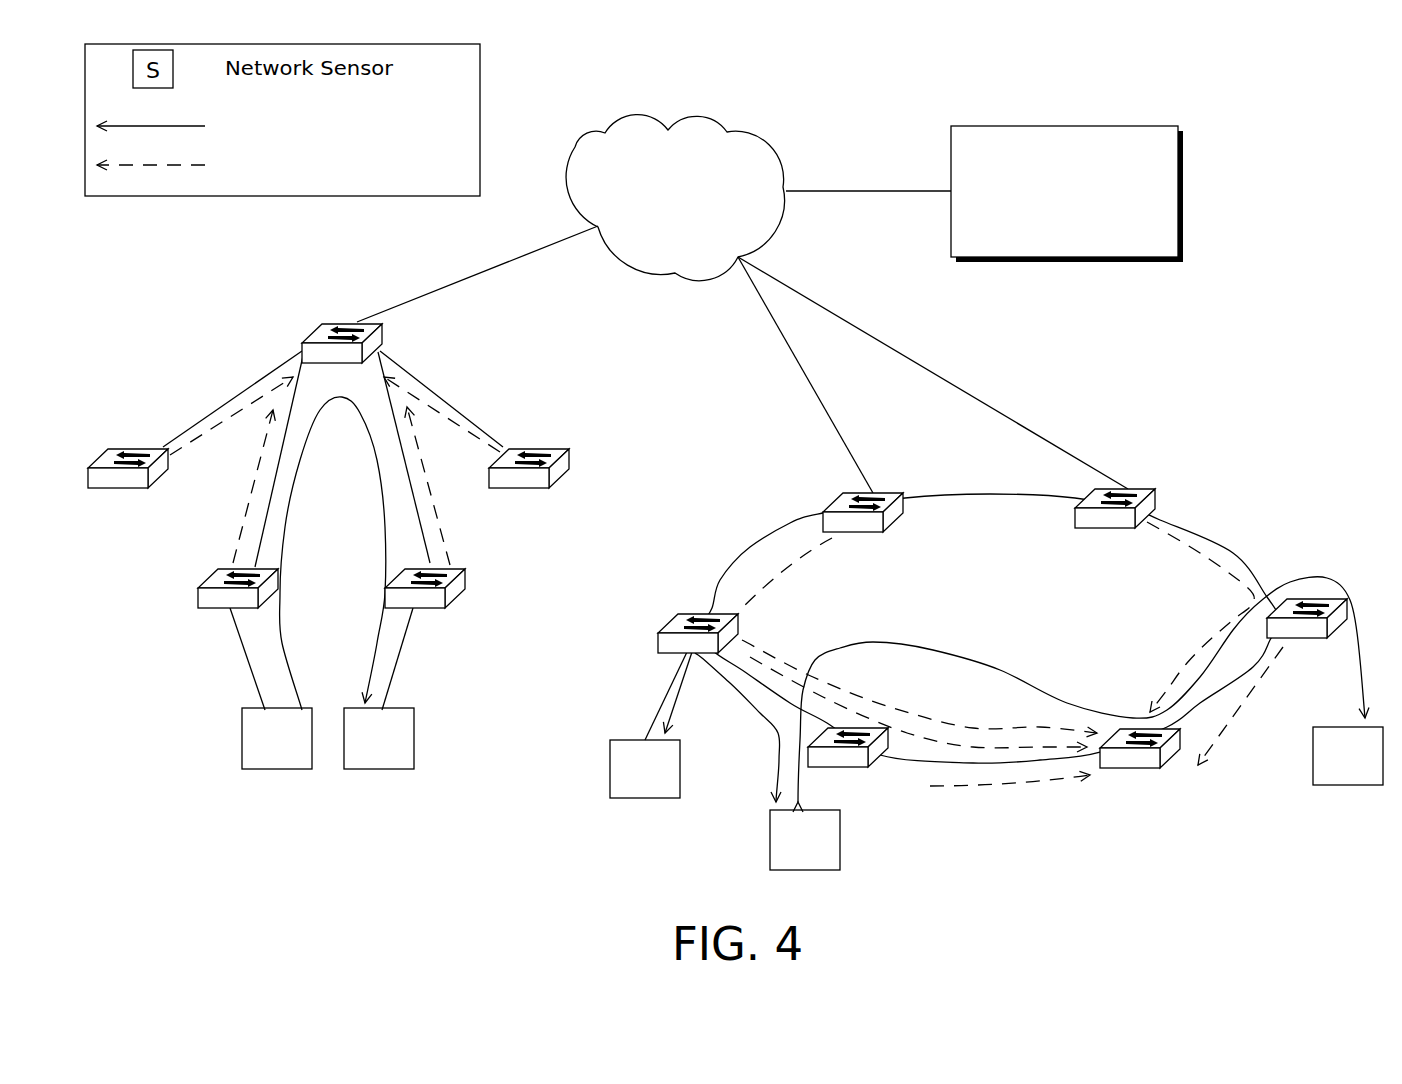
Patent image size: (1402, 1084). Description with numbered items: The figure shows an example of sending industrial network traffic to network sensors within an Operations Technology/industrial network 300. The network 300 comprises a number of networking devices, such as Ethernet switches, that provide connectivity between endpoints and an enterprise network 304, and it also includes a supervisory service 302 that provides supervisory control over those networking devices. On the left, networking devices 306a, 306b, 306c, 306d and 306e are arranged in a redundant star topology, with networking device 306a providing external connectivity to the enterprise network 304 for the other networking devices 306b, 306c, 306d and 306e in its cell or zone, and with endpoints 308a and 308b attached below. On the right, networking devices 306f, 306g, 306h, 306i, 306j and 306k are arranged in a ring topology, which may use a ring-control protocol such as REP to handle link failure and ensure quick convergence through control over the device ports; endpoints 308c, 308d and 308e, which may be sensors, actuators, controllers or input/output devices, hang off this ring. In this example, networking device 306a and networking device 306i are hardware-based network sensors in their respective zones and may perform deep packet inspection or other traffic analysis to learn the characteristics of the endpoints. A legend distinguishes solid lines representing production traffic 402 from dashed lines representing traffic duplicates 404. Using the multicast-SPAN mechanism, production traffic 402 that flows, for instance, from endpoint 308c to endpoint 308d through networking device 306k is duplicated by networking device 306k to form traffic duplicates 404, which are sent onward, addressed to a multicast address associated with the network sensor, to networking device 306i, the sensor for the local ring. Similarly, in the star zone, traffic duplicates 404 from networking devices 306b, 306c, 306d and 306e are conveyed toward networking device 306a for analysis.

The network 300 is at (735, 465).
The supervisory service 302 is at (1047, 232).
The enterprise network 304 is at (660, 236).
The networking device 306a is at (310, 364).
The networking device 306b is at (107, 489).
The networking device 306c is at (509, 489).
The networking device 306d is at (205, 609).
The networking device 306e is at (430, 609).
The networking device 306f is at (843, 533).
The networking device 306g is at (1093, 529).
The networking device 306h is at (1302, 638).
The networking device 306i is at (1117, 768).
The networking device 306j is at (843, 767).
The networking device 306k is at (680, 653).
The endpoint 308a is at (253, 749).
The endpoint 308b is at (355, 749).
The endpoint 308c is at (621, 780).
The endpoint 308d is at (781, 852).
The endpoint 308e is at (1324, 768).
The production traffic 402 is at (279, 126).
The traffic duplicates 404 is at (277, 165).